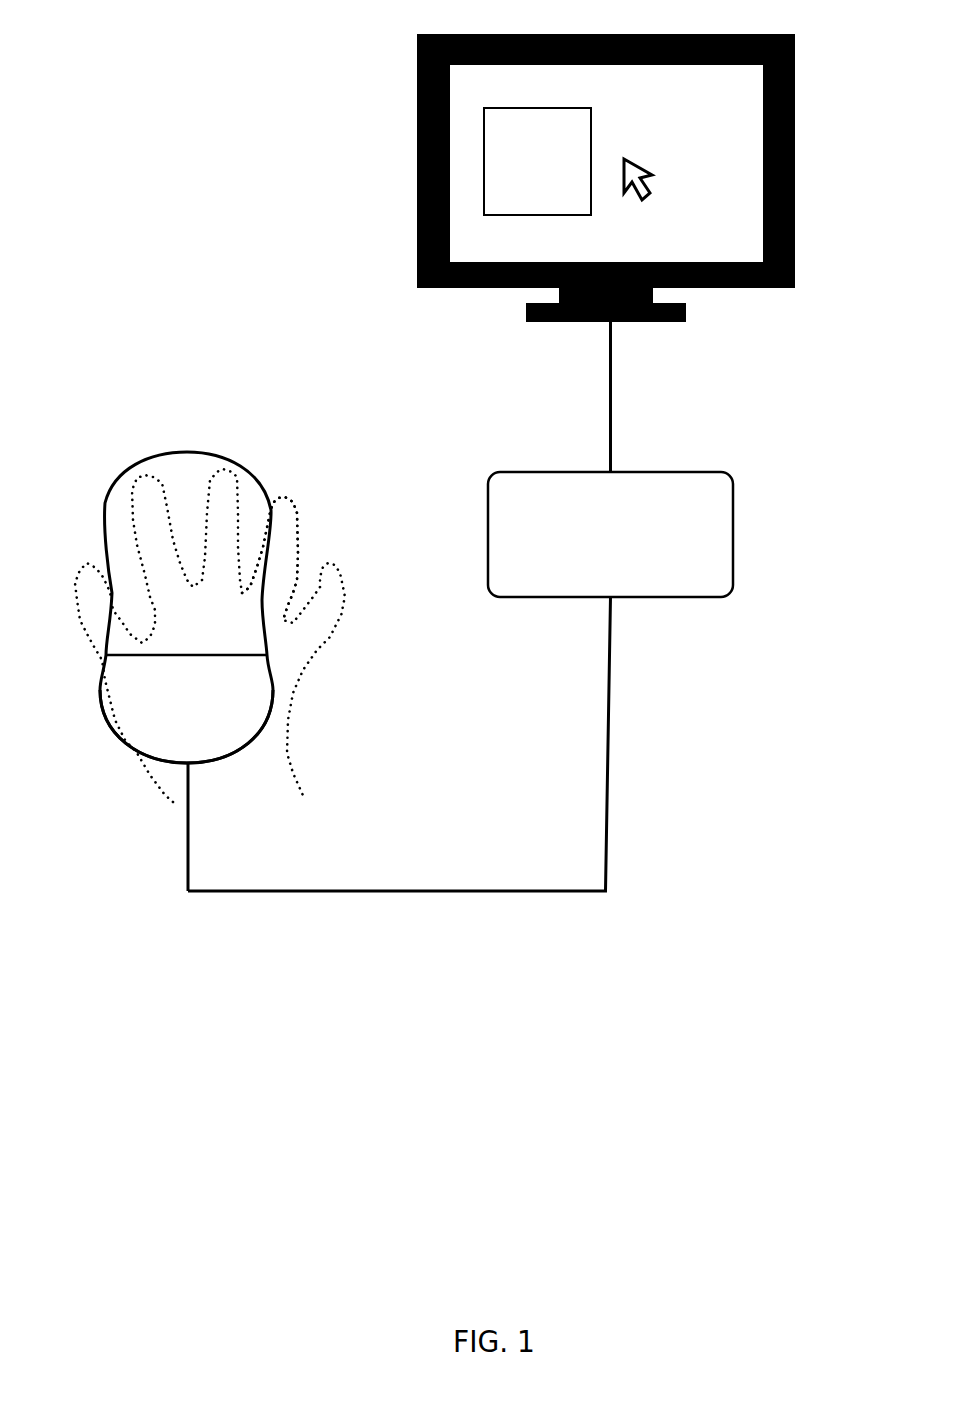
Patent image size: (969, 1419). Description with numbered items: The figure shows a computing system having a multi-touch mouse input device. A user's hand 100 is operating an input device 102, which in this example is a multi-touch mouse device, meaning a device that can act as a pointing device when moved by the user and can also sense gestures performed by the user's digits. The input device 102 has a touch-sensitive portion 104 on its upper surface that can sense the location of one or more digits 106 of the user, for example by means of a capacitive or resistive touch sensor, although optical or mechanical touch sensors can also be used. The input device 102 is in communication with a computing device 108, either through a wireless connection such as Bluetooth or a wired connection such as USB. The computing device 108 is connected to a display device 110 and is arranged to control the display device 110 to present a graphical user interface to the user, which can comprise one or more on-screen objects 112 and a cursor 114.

The hand 100 is at (298, 783).
The input device 102 is at (205, 452).
The touch-sensitive portion 104 is at (110, 528).
The digits 106 is at (297, 505).
The computing device 108 is at (733, 529).
The display device 110 is at (795, 55).
The on-screen objects 112 is at (592, 117).
The cursor 114 is at (646, 200).